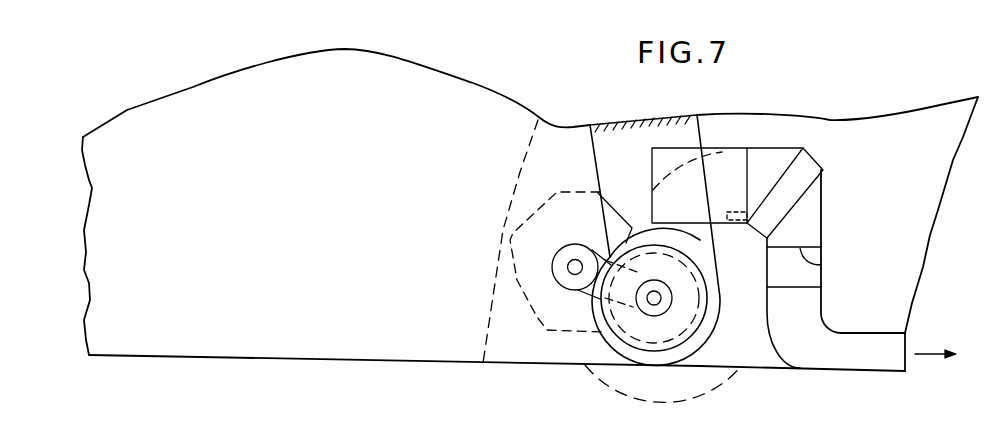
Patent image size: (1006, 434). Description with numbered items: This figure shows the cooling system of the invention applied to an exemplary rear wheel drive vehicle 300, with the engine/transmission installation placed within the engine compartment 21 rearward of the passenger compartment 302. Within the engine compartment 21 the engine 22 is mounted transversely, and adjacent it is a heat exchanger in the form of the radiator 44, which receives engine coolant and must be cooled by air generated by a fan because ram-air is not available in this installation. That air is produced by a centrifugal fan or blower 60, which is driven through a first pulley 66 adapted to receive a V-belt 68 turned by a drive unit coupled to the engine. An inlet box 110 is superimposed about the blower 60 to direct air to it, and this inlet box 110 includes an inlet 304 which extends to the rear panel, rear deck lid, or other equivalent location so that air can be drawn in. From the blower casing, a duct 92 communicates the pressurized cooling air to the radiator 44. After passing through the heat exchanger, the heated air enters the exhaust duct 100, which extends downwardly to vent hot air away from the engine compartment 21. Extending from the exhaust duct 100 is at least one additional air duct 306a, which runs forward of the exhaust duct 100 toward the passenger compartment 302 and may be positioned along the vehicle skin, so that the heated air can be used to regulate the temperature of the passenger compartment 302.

The rear wheel drive vehicle 300 is at (478, 83).
The passenger compartment 302 is at (514, 118).
The engine compartment 21 is at (567, 140).
The inlet 304 is at (677, 118).
The inlet box 110 is at (590, 147).
The engine 22 is at (569, 190).
The duct 92 is at (737, 188).
The radiator 44 is at (752, 165).
The exhaust duct 100 is at (817, 215).
The additional air duct 306a is at (820, 263).
The V-belt 68 is at (597, 247).
The first pulley 66 is at (657, 277).
The blower 60 is at (617, 343).